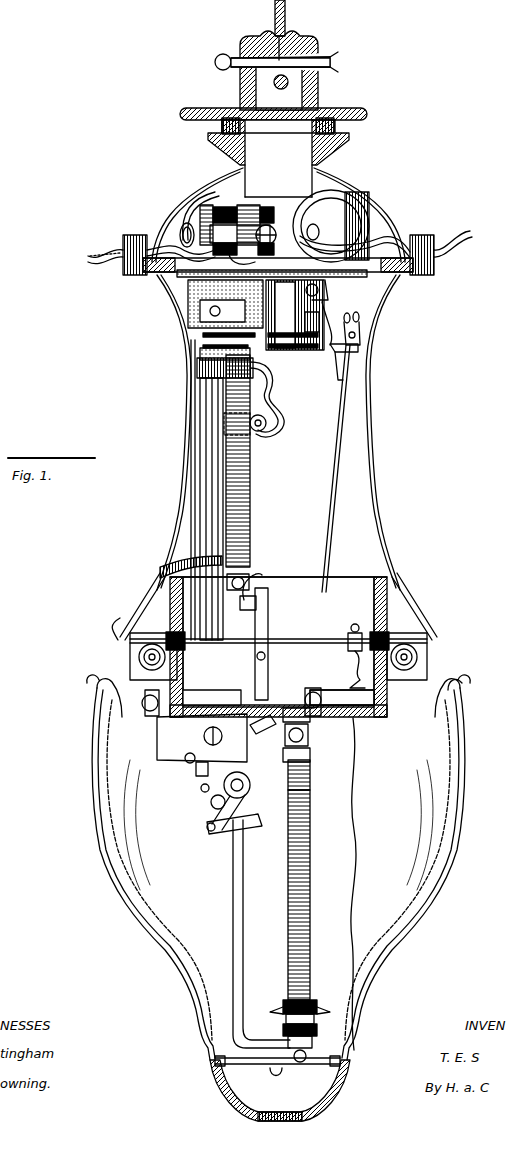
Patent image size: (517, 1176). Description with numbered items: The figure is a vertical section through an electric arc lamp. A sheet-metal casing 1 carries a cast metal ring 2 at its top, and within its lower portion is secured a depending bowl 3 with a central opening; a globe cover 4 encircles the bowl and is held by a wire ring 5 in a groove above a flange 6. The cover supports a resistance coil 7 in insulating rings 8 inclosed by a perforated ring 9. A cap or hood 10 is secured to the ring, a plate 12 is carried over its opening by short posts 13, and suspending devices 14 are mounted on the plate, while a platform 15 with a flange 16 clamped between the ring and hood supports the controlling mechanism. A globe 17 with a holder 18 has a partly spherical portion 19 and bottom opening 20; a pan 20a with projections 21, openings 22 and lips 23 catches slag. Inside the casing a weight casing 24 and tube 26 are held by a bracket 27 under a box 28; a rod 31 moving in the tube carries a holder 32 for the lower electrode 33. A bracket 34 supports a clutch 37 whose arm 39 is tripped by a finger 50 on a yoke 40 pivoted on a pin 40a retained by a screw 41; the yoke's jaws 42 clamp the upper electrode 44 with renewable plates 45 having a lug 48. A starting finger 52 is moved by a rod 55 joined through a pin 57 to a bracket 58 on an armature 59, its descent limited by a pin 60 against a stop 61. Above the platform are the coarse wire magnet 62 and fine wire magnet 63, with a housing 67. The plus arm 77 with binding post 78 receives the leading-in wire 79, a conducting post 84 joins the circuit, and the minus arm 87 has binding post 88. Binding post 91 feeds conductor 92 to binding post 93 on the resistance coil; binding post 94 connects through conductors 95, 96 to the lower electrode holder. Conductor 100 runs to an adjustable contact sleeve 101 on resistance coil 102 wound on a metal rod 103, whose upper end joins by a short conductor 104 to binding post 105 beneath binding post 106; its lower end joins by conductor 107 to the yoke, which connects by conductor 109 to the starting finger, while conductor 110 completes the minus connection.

The casing 1 is at (371, 414).
The cast metal ring 2 is at (418, 270).
The bowl 3 is at (378, 612).
The globe cover 4 is at (440, 683).
The wire ring 5 is at (387, 696).
The flange 6 is at (387, 714).
The resistance coil 7 is at (130, 659).
The insulating rings 8 is at (150, 644).
The perforated ring 9 is at (118, 640).
The cap or hood 10 is at (372, 200).
The plate 12 is at (218, 110).
The short posts 13 is at (222, 126).
The suspending devices 14 is at (291, 18).
The platform 15 is at (382, 274).
The flange 16 is at (152, 273).
The globe 17 is at (128, 905).
The holder 18 is at (100, 700).
The partly spherical portion 19 is at (300, 1112).
The opening 20 is at (220, 1090).
The pan 20a is at (232, 1100).
The projections 21 is at (338, 1094).
The openings 22 is at (214, 1068).
The lips 23 is at (226, 1063).
The weight casing 24 is at (200, 474).
The tube 26 is at (248, 668).
The bracket 27 is at (185, 563).
The box 28 is at (197, 370).
The rod 31 is at (233, 903).
The holder 32 is at (310, 1010).
The lower electrode 33 is at (311, 904).
The bracket 34 is at (198, 774).
The clutch 37 is at (256, 832).
The arm 39 is at (210, 816).
The yoke 40 is at (157, 742).
The pivot pin 40a is at (248, 790).
The screw 41 is at (202, 790).
The jaws 42 is at (150, 706).
The upper electrode 44 is at (310, 760).
The renewable plates 45 is at (308, 740).
The lug 48 is at (310, 722).
The finger or plate 50 is at (203, 745).
The starting finger 52 is at (311, 797).
The rod 55 is at (340, 414).
The pin 57 is at (360, 340).
The bracket 58 is at (360, 324).
The armature 59 is at (318, 330).
The pin 60 is at (358, 350).
The stop 61 is at (340, 372).
The coarse wire magnet 62 is at (355, 208).
The fine wire magnet 63 is at (245, 206).
The housing 67 is at (225, 304).
The arm 77 is at (186, 225).
The binding post 78 is at (180, 226).
The plus leading-in wire 79 is at (105, 247).
The conducting post 84 is at (272, 208).
The arm 87 is at (456, 239).
The binding post 88 is at (313, 223).
The binding post 91 is at (295, 322).
The conductor 92 is at (191, 407).
The binding post 93 is at (248, 626).
The binding post 94 is at (352, 634).
The conductor 95 is at (355, 661).
The conductor 96 is at (355, 760).
The conductor 100 is at (262, 392).
The adjustable contact sleeve 101 is at (262, 430).
The resistance coil 102 is at (250, 475).
The metal rod 103 is at (250, 586).
The short conductor 104 is at (260, 337).
The binding post 105 is at (200, 350).
The binding post 106 is at (204, 203).
The conductor 107 is at (256, 600).
The conductor 109 is at (263, 729).
The conductor 110 is at (278, 631).